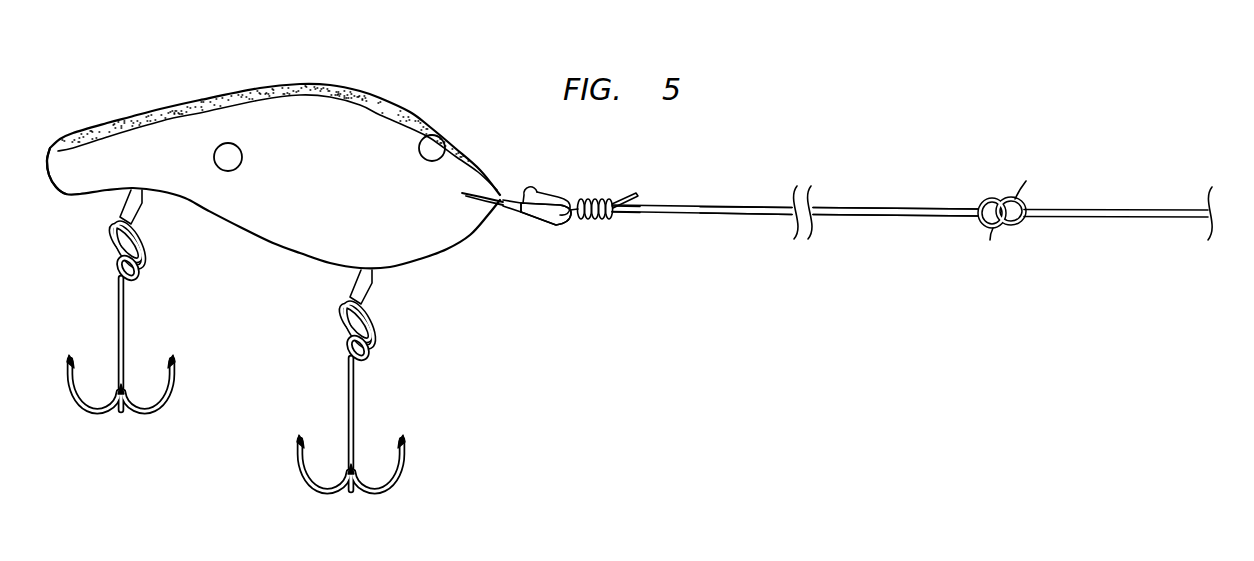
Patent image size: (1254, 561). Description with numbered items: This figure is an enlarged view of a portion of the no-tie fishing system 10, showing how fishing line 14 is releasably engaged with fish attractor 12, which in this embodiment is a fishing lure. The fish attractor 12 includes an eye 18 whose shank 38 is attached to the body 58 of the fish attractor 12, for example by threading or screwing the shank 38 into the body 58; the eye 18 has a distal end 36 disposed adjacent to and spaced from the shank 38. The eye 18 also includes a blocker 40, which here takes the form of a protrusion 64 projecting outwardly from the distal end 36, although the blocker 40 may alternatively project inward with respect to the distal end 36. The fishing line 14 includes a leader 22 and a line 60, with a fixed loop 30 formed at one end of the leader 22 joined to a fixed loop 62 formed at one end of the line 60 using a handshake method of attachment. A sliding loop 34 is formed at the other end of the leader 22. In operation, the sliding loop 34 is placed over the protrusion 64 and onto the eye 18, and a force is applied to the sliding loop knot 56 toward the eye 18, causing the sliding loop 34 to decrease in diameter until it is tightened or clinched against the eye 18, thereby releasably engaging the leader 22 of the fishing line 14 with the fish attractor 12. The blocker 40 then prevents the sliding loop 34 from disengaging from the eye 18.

The fishing system 10 is at (767, 146).
The fish attractor 12 is at (244, 76).
The fishing line 14 is at (906, 185).
The eye 18 is at (553, 247).
The leader 22 is at (711, 217).
The fixed loop 30 is at (1016, 197).
The sliding loop 34 is at (602, 190).
The distal end 36 is at (557, 183).
The shank 38 is at (522, 215).
The blocker 40 is at (542, 177).
The sliding loop knot 56 is at (596, 221).
The body 58 is at (73, 200).
The line 60 is at (1142, 218).
The fixed loop 62 is at (990, 234).
The protrusion 64 is at (533, 182).